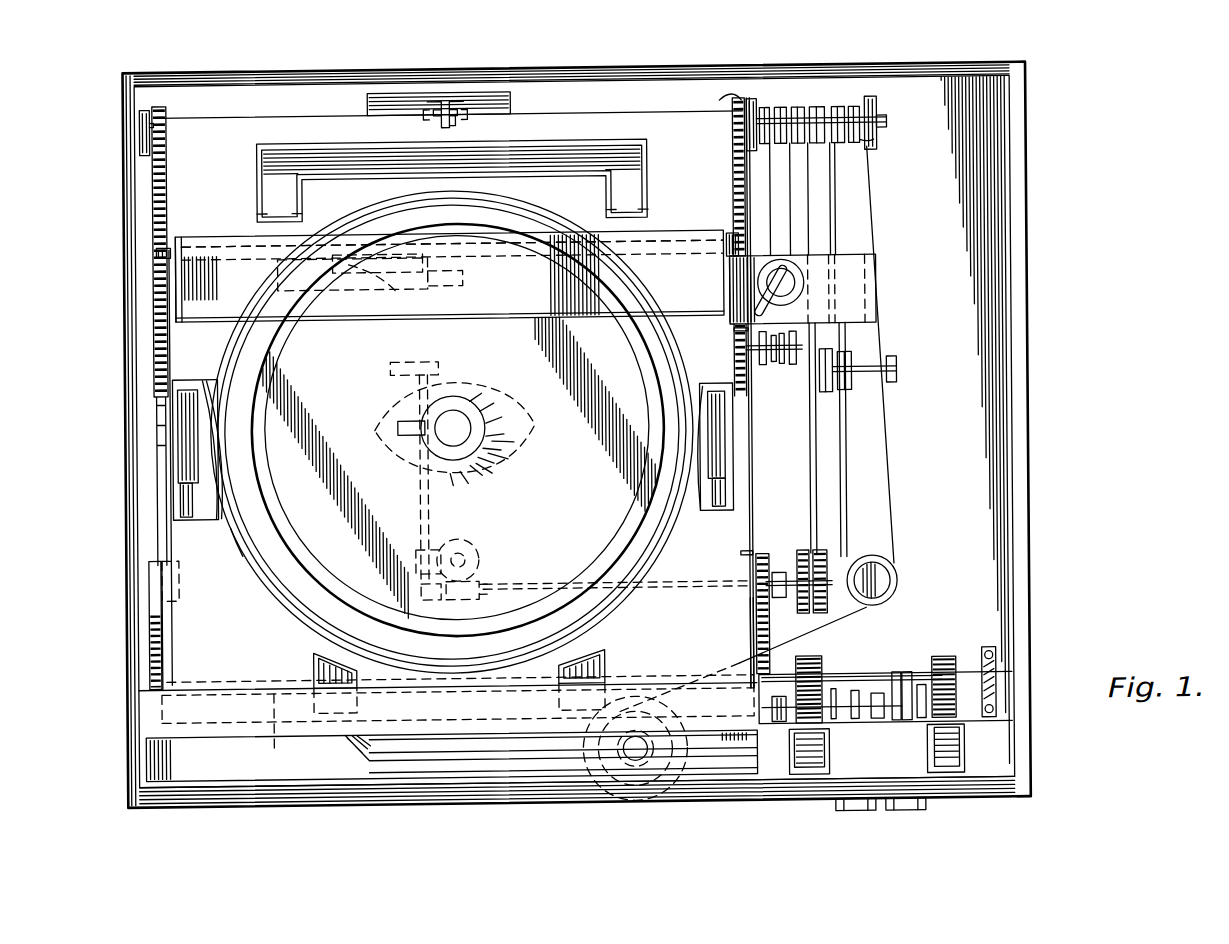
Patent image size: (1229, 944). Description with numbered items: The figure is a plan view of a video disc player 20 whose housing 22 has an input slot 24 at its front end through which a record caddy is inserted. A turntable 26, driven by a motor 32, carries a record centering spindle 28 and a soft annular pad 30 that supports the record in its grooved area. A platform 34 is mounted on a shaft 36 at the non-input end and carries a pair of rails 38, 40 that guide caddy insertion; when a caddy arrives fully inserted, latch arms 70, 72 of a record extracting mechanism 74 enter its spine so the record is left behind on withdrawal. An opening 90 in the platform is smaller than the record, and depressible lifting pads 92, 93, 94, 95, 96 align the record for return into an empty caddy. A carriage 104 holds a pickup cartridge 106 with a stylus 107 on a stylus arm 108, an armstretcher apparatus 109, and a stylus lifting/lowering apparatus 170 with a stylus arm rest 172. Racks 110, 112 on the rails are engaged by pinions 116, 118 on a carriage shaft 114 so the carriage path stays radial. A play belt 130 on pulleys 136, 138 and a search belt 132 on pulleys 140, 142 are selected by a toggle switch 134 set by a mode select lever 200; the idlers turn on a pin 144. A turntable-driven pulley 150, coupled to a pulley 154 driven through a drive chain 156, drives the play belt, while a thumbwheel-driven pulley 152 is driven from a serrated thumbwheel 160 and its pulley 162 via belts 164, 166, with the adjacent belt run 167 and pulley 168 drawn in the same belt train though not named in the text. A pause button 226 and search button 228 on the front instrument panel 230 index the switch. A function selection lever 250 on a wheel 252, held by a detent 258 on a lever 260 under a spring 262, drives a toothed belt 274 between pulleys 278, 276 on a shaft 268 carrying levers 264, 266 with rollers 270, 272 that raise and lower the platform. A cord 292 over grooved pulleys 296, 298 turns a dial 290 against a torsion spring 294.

The video disc player 20 is at (1131, 242).
The housing 22 is at (1024, 274).
The input slot 24 is at (148, 756).
The turntable 26 is at (305, 594).
The record centering spindle 28 is at (486, 432).
The soft annular pad 30 is at (272, 524).
The motor 32 is at (512, 444).
The platform 34 is at (197, 113).
The shaft 36 is at (143, 118).
The rail 38 is at (171, 648).
The rail 40 is at (745, 652).
The latch arm 70 is at (438, 118).
The latch arm 72 is at (462, 118).
The record extracting mechanism 74 is at (356, 94).
The opening 90 is at (243, 543).
The lifting pad 92 is at (322, 652).
The lifting pad 93 is at (600, 650).
The lifting pad 94 is at (185, 450).
The lifting pad 95 is at (722, 447).
The lifting pad 96 is at (631, 190).
The carriage 104 is at (528, 310).
The pickup cartridge 106 is at (320, 300).
The stylus 107 is at (466, 278).
The stylus arm 108 is at (430, 300).
The armstretcher apparatus 109 is at (182, 320).
The rack 110 is at (170, 156).
The rack 112 is at (740, 203).
The shaft 114 is at (606, 248).
The pinion 116 is at (157, 247).
The pinion 118 is at (736, 256).
The endless play belt 130 is at (736, 155).
The endless search belt 132 is at (820, 180).
The toggle switch 134 is at (890, 281).
The pulley 136 is at (744, 100).
The pulley 138 is at (770, 368).
The pulley 140 is at (771, 108).
The pulley 142 is at (790, 370).
The pin 144 is at (749, 332).
The turntable-driven pulley 150 is at (812, 110).
The thumbwheel-driven pulley 152 is at (846, 108).
The pulley 154 is at (795, 560).
The drive chain 156 is at (482, 552).
The serrated thumbwheel 160 is at (806, 768).
The pulley 162 is at (848, 698).
The endless belt 164 is at (845, 544).
The endless belt 166 is at (843, 218).
The belt 167 is at (810, 495).
The pulley 168 is at (850, 396).
The stylus lifting/lowering apparatus 170 is at (386, 298).
The stylus arm rest 172 is at (364, 296).
The mode select lever 200 is at (762, 300).
The pause button 226 is at (848, 800).
The search button 228 is at (903, 800).
The front instrument panel 230 is at (134, 787).
The function selection lever 250 is at (962, 740).
The function selection wheel 252 is at (962, 762).
The detent 258 is at (968, 676).
The lever 260 is at (996, 662).
The spring 262 is at (996, 698).
The lever 264 is at (147, 583).
The lever 266 is at (755, 608).
The shaft 268 is at (876, 694).
The roller 270 is at (178, 584).
The roller 272 is at (738, 558).
The endless toothed belt 274 is at (906, 728).
The toothed pulley 276 is at (912, 680).
The toothed pulley 278 is at (893, 728).
The dial 290 is at (581, 746).
The cord 292 is at (886, 472).
The torsion spring 294 is at (652, 749).
The grooved pulley 296 is at (882, 564).
The grooved pulley 298 is at (864, 144).